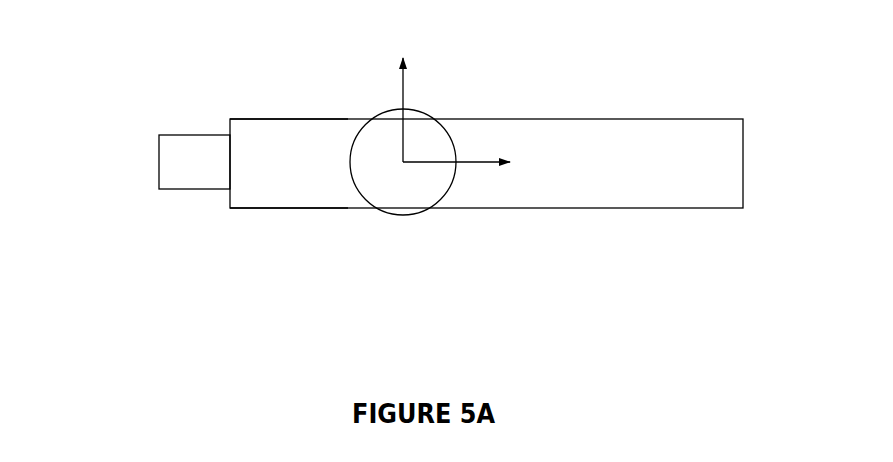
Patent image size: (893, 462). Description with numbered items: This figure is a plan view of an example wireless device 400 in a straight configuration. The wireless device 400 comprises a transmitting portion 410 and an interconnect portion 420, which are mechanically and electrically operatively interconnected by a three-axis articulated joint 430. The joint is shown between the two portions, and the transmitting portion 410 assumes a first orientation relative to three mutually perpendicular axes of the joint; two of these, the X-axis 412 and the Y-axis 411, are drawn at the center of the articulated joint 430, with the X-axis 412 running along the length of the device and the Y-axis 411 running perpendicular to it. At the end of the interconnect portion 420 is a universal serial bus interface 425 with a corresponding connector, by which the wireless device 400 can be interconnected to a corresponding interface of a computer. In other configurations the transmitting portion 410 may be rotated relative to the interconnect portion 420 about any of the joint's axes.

The wireless device 400 is at (84, 44).
The transmitting portion 410 is at (675, 219).
The Y-axis 411 is at (428, 96).
The X-axis 412 is at (488, 163).
The interconnect portion 420 is at (282, 113).
The universal serial bus interface 425 is at (158, 155).
The three-axis articulated joint 430 is at (408, 229).